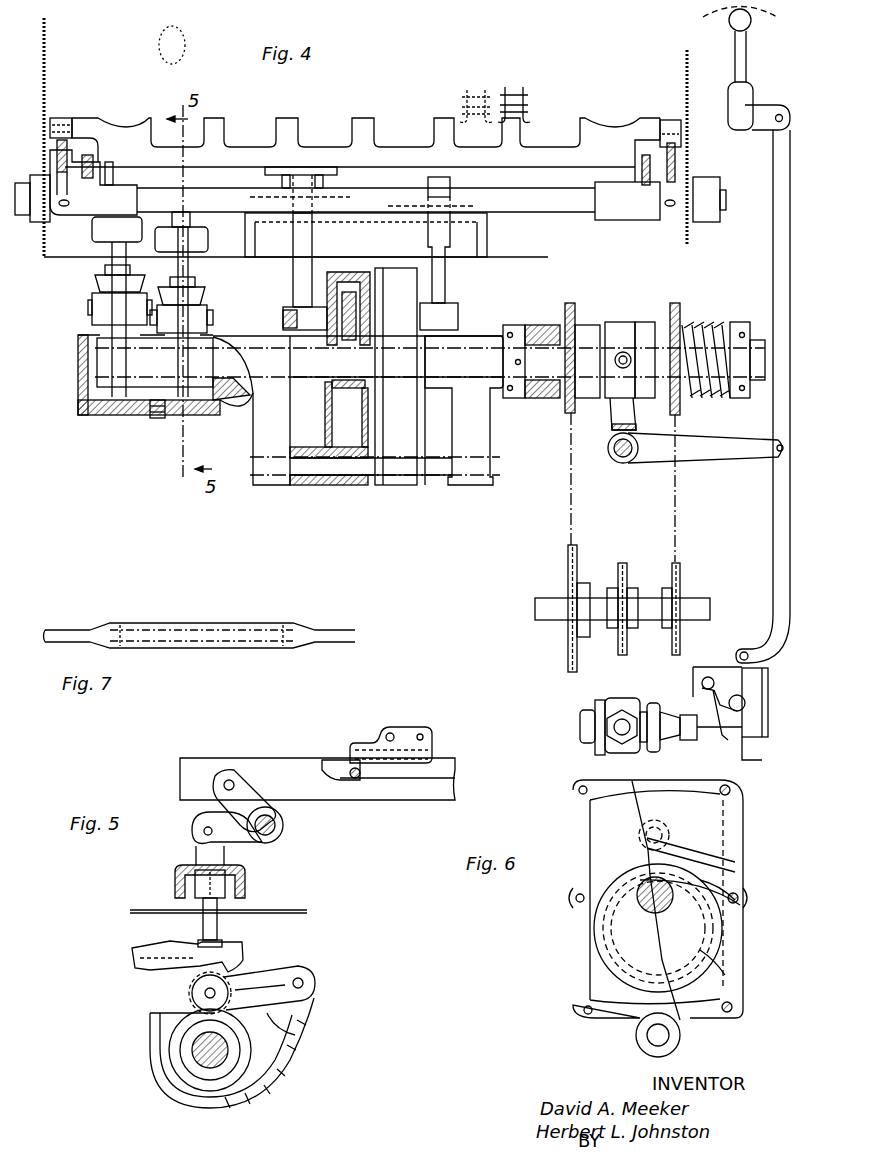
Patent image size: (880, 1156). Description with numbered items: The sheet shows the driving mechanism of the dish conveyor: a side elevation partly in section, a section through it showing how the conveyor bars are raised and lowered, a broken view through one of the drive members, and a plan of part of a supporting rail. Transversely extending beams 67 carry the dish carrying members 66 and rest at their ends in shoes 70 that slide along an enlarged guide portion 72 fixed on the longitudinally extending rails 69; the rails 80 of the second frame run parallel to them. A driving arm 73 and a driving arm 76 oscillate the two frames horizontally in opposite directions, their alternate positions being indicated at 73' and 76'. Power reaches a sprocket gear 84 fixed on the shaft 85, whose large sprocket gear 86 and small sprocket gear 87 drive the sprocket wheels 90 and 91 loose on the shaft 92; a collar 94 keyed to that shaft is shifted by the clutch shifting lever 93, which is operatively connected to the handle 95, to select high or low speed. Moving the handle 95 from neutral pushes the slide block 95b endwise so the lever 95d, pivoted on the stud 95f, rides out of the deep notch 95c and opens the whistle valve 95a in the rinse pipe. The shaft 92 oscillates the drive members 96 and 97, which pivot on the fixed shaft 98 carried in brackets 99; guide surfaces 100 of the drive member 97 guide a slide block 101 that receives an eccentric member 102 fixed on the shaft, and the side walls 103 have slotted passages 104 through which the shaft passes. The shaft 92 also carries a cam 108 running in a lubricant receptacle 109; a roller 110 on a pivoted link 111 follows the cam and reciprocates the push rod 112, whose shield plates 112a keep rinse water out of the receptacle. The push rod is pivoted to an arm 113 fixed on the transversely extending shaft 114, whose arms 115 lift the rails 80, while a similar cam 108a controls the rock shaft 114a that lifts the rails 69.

In FIG. 4, the transversely extending beams 67 is at (259, 147).
In FIG. 4, the shoes 70 is at (63, 118).
In FIG. 5, the shoes 70 is at (412, 727).
In FIG. 4, the longitudinally extending rails 69 is at (52, 158).
In FIG. 7, the longitudinally extending rails 69 is at (80, 629).
In FIG. 4, the rails 80 is at (94, 161).
In FIG. 5, the rails 80 is at (382, 792).
In FIG. 4, the arms 115 is at (113, 178).
In FIG. 5, the arms 115 is at (240, 788).
In FIG. 4, the rock shaft 114a is at (253, 197).
In FIG. 4, the dashed rod position 73' is at (317, 192).
In FIG. 4, the dashed rod position 76' is at (446, 193).
In FIG. 4, the arm 113 is at (191, 216).
In FIG. 5, the arm 113 is at (250, 843).
In FIG. 4, the driving arm 73 is at (312, 271).
In FIG. 4, the driving arm 76 is at (424, 271).
In FIG. 4, the dish carrying members 66 is at (514, 95).
In FIG. 4, the handle 95 is at (746, 57).
In FIG. 4, the push rod 112 is at (190, 266).
In FIG. 5, the push rod 112 is at (205, 921).
In FIG. 4, the shield plates 112a is at (206, 289).
In FIG. 5, the shield plates 112a is at (134, 957).
In FIG. 4, the roller 110 is at (208, 317).
In FIG. 5, the roller 110 is at (190, 994).
In FIG. 4, the drive member 96 is at (340, 280).
In FIG. 4, the side walls 103 is at (345, 301).
In FIG. 6, the side walls 103 is at (625, 941).
In FIG. 4, the drive member 97 is at (420, 285).
In FIG. 6, the drive member 97 is at (735, 879).
In FIG. 4, the shaft 92 is at (298, 368).
In FIG. 5, the shaft 92 is at (195, 1045).
In FIG. 6, the shaft 92 is at (640, 893).
In FIG. 4, the lubricant receptacle 109 is at (100, 418).
In FIG. 5, the lubricant receptacle 109 is at (150, 1059).
In FIG. 4, the cam 108 is at (180, 415).
In FIG. 5, the cam 108 is at (265, 1068).
In FIG. 4, the cam 108a is at (115, 420).
In FIG. 4, the brackets 99 is at (262, 447).
In FIG. 4, the fixed shaft 98 is at (313, 485).
In FIG. 6, the fixed shaft 98 is at (668, 1037).
In FIG. 4, the driven sprocket wheel 90 is at (575, 294).
In FIG. 4, the collar 94 is at (637, 303).
In FIG. 4, the driven sprocket wheel 91 is at (676, 303).
In FIG. 4, the clutch shifting lever 93 is at (722, 440).
In FIG. 4, the shaft 85 is at (700, 605).
In FIG. 4, the large sprocket gear 86 is at (568, 558).
In FIG. 4, the sprocket gear 84 is at (634, 558).
In FIG. 4, the small sprocket gear 87 is at (684, 567).
In FIG. 4, the whistle valve 95a is at (650, 693).
In FIG. 4, the deep notch 95c is at (748, 707).
In FIG. 4, the slide block 95b is at (757, 742).
In FIG. 4, the stud 95f is at (710, 677).
In FIG. 4, the lever 95d is at (745, 650).
In FIG. 7, the enlarged guide portion 72 is at (205, 613).
In FIG. 5, the enlarged guide portion 72 is at (447, 766).
In FIG. 5, the transversely extending shaft 114 is at (285, 825).
In FIG. 5, the pivoted link 111 is at (272, 977).
In FIG. 6, the guide surfaces 100 is at (592, 832).
In FIG. 6, the slide block 101 is at (597, 972).
In FIG. 6, the slotted passages 104 is at (740, 897).
In FIG. 6, the eccentric member 102 is at (720, 956).